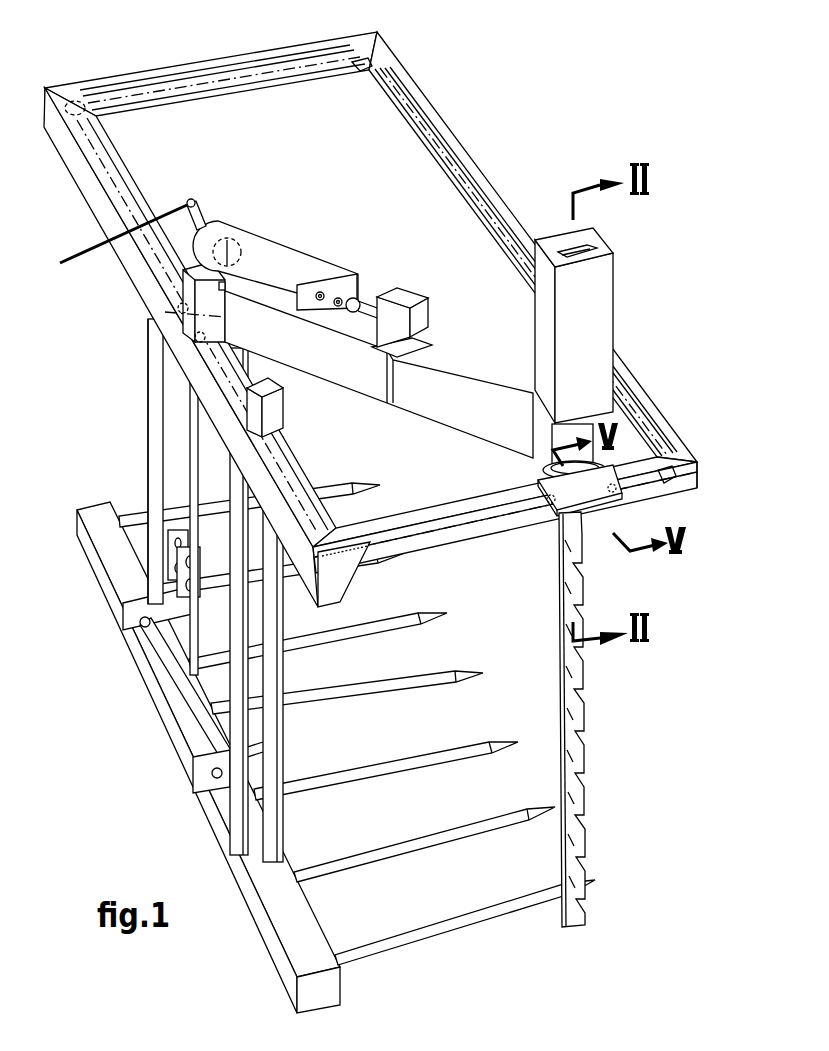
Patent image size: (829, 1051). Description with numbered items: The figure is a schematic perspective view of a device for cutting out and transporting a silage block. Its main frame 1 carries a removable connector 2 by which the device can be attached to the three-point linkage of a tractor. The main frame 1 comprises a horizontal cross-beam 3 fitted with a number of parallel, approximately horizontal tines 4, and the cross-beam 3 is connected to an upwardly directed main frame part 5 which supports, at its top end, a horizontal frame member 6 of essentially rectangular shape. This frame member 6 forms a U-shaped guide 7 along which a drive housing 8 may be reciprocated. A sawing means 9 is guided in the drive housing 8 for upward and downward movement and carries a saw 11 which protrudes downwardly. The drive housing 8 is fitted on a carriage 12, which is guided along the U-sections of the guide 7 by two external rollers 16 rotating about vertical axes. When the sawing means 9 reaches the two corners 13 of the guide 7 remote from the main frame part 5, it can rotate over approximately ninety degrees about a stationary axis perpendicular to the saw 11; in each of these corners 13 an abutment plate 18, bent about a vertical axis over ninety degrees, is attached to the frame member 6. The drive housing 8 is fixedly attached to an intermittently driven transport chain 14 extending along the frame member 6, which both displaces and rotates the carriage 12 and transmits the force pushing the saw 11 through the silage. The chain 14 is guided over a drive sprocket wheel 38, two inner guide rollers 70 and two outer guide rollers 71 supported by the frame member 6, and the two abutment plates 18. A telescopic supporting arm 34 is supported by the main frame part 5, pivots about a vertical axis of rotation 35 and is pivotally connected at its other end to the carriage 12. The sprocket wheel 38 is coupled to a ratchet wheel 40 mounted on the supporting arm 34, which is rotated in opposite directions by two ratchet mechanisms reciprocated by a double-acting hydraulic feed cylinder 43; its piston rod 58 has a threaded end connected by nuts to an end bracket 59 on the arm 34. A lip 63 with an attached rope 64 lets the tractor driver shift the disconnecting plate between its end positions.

The main frame 1 is at (140, 378).
The removable connector 2 is at (170, 577).
The horizontal cross-beam 3 is at (300, 920).
The tines 4 is at (437, 838).
The upwardly directed main frame part 5 is at (152, 420).
The horizontal frame member 6 is at (237, 52).
The U-shaped guide 7 is at (282, 53).
The drive housing 8 is at (620, 317).
The sawing means 9 is at (592, 741).
The saw 11 is at (576, 782).
The carriage 12 is at (538, 480).
The corners of the U-shaped guide 13 is at (378, 31).
The transport chain 14 is at (453, 525).
The external rollers 16 is at (571, 510).
The abutment plate 18 is at (357, 73).
The supporting arm 34 is at (340, 370).
The vertical axis of rotation 35 is at (237, 252).
The drive sprocket wheel 38 is at (232, 317).
The ratchet wheel 40 is at (230, 250).
The hydraulic feed cylinder 43 is at (357, 276).
The piston rod 58 is at (367, 303).
The end bracket 59 is at (403, 303).
The lip 63 is at (199, 213).
The rope 64 is at (80, 250).
The inner guide rollers 70 is at (196, 338).
The outer guide rollers 71 is at (88, 113).